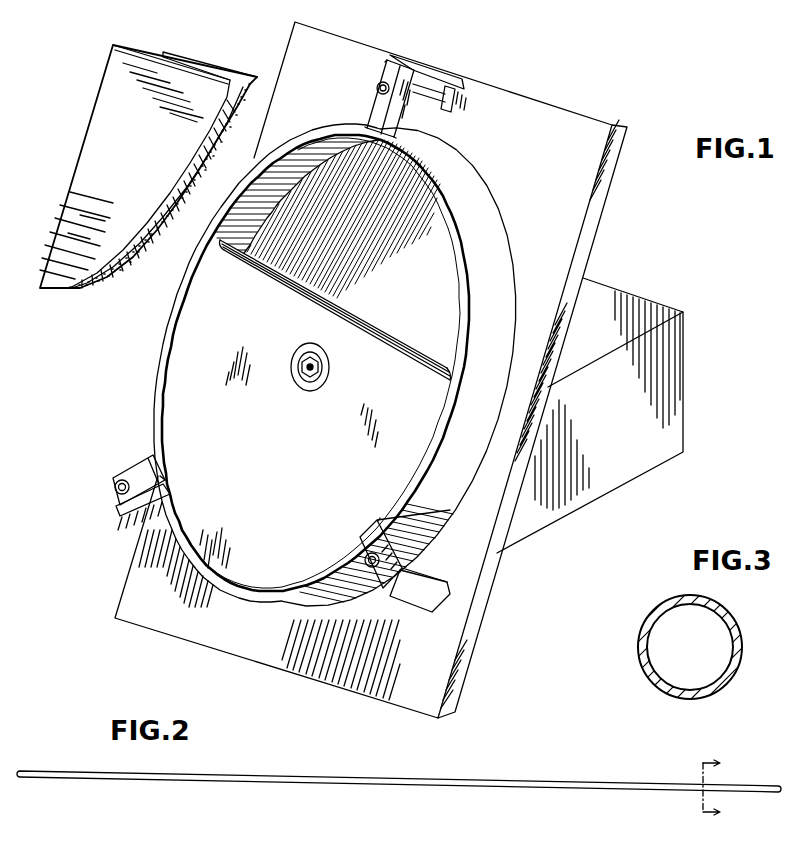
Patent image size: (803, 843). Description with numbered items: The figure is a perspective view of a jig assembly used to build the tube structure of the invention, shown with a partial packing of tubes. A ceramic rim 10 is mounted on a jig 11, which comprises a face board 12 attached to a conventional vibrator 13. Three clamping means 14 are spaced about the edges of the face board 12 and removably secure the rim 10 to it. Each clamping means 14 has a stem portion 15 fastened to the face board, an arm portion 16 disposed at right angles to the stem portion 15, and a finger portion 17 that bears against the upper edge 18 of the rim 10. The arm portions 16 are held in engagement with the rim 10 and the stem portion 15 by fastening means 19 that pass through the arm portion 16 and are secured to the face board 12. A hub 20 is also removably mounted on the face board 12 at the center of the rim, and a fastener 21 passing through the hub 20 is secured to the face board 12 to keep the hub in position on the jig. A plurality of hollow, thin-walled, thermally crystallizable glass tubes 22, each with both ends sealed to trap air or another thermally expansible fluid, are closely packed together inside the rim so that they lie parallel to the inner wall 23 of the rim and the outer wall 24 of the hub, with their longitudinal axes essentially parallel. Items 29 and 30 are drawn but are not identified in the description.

In FIG. 1, the ceramic rim 10 is at (482, 192).
In FIG. 1, the jig 11 is at (666, 232).
In FIG. 1, the face board 12 is at (583, 130).
In FIG. 1, the vibrator 13 is at (670, 424).
In FIG. 1, the clamping means 14 is at (383, 72).
In FIG. 1, the stem portion 15 is at (450, 80).
In FIG. 1, the arm portion 16 is at (373, 108).
In FIG. 1, the finger portion 17 is at (362, 127).
In FIG. 1, the upper edge 18 is at (422, 457).
In FIG. 1, the fastening means 19 is at (385, 82).
In FIG. 1, the hub 20 is at (324, 358).
In FIG. 1, the fastener 21 is at (302, 367).
In FIG. 1, the glass tube 22 is at (298, 280).
In FIG. 3, the glass tube 22 is at (651, 664).
In FIG. 2, the glass tube 22 is at (20, 772).
In FIG. 1, the inner wall 23 is at (292, 196).
In FIG. 1, the outer wall 24 is at (326, 380).
In FIG. 1, the wedge layer 29 is at (220, 68).
In FIG. 1, the wedge 30 is at (130, 46).